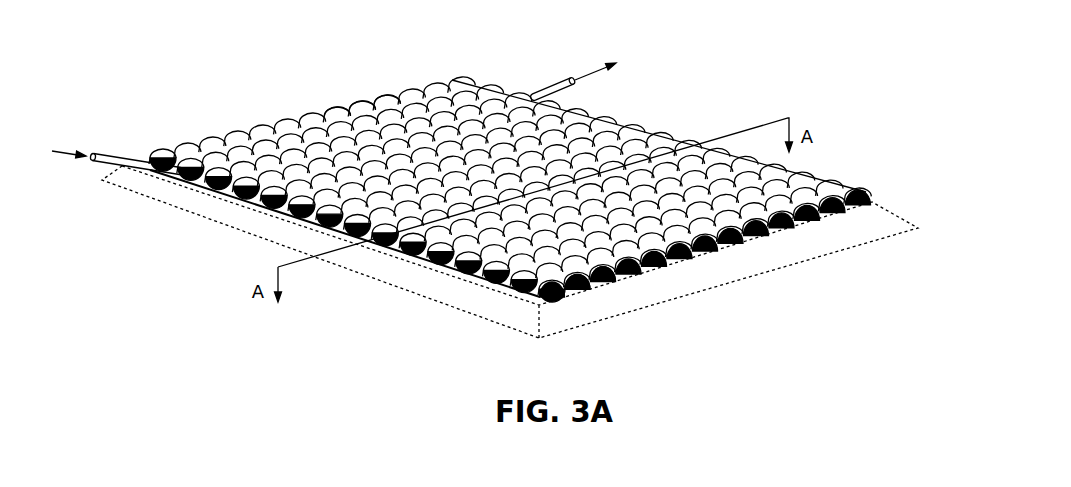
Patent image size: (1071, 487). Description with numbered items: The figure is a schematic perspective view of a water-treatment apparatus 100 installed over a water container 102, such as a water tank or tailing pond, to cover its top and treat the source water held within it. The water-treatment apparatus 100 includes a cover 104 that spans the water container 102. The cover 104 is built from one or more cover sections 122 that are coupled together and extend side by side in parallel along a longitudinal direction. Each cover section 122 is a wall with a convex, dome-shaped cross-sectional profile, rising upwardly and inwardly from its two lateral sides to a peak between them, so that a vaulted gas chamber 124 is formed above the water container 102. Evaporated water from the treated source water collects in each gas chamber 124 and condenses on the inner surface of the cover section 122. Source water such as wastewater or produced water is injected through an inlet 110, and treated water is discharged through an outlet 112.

The water-treatment apparatus 100 is at (125, 74).
The water container 102 is at (228, 228).
The cover 104 is at (655, 93).
The inlet 110 is at (97, 164).
The outlet 112 is at (563, 82).
The cover section 122 is at (386, 93).
The gas chamber 124 is at (609, 279).